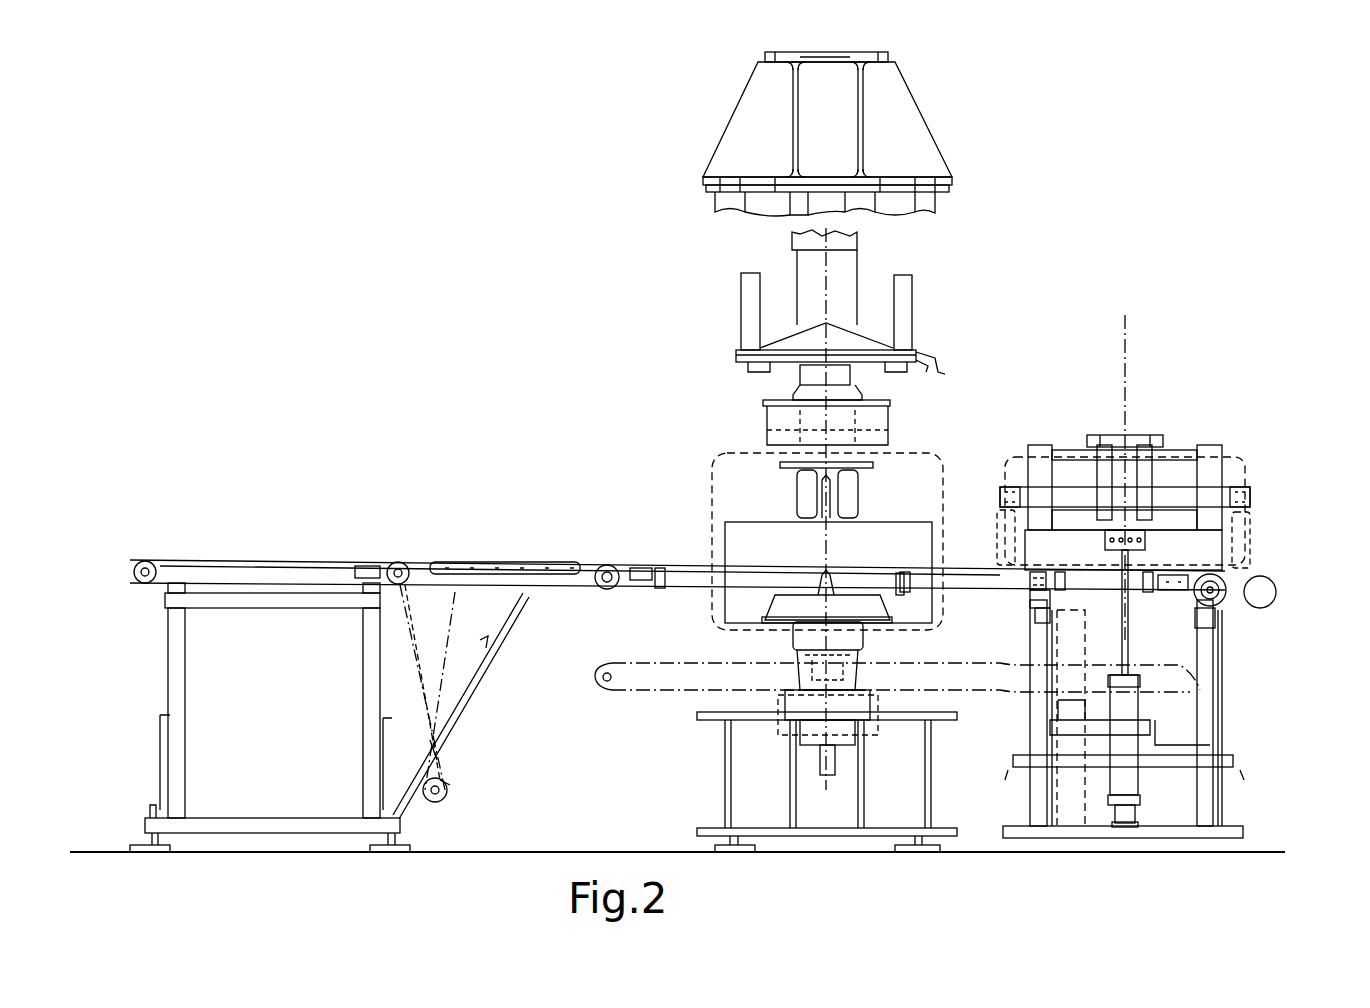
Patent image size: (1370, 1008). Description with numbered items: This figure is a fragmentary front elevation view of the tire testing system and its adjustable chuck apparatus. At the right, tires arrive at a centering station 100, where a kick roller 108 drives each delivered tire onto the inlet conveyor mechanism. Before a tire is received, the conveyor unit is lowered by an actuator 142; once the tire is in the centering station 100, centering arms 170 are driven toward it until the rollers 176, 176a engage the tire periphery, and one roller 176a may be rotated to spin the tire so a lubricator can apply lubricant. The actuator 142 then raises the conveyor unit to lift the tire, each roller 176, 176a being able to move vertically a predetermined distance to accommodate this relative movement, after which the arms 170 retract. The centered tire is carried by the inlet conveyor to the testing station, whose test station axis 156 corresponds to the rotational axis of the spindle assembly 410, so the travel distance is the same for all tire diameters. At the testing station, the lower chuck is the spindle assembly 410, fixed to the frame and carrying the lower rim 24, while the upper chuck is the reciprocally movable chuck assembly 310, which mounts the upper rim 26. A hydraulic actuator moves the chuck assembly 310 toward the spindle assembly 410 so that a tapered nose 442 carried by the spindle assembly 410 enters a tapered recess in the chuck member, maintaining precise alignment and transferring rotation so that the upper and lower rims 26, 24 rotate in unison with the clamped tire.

The chuck assembly 310 is at (878, 258).
The upper rim 26 is at (880, 432).
The test station axis 156 is at (830, 548).
The lower rim 24 is at (772, 600).
The tapered nose 442 is at (760, 583).
The spindle assembly 410 is at (880, 665).
The centering station 100 is at (1180, 420).
The centering arm 170 is at (1075, 495).
The centering roller 176 is at (1000, 530).
The centering roller 176a is at (1248, 530).
The kick roller 108 is at (1272, 590).
The actuator 142 is at (1135, 785).